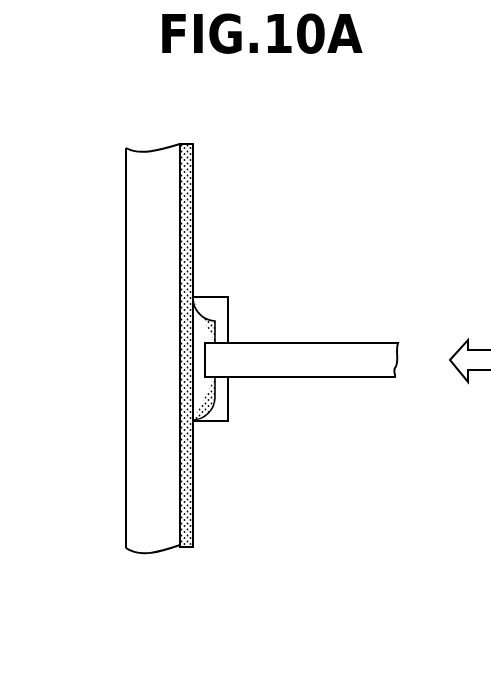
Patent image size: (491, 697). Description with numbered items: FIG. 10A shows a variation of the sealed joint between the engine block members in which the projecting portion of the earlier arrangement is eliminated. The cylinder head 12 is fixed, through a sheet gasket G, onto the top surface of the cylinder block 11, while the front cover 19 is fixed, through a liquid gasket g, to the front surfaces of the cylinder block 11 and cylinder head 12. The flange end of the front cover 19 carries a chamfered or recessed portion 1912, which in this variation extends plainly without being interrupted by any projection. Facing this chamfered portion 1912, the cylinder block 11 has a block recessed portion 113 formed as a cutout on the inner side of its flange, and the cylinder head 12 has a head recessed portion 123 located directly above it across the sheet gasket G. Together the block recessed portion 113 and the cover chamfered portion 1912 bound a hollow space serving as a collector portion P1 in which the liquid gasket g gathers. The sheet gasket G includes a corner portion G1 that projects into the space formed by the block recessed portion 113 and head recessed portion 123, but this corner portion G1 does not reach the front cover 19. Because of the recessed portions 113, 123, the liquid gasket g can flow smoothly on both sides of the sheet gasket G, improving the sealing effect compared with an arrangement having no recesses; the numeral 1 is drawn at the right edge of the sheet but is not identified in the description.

The front cover 19 is at (157, 503).
The recessed portion 1912 is at (192, 175).
The liquid gasket g is at (187, 253).
The cylinder head 12 is at (240, 239).
The cylinder block 11 is at (227, 482).
The head recessed portion 123 is at (228, 312).
The block recessed portion 113 is at (228, 397).
The sheet gasket G is at (330, 363).
The corner portion G1 is at (212, 363).
The collector portion P1 is at (185, 522).
The device 1 is at (483, 507).